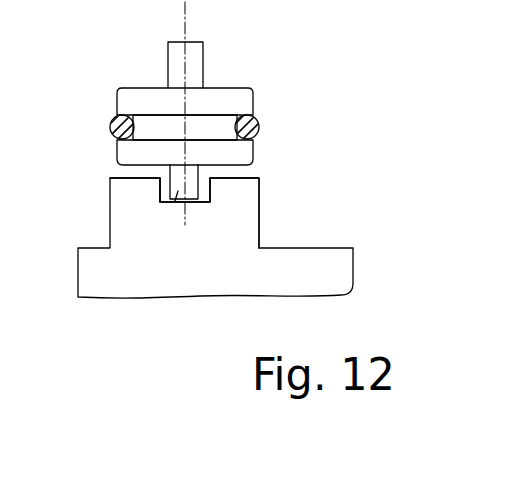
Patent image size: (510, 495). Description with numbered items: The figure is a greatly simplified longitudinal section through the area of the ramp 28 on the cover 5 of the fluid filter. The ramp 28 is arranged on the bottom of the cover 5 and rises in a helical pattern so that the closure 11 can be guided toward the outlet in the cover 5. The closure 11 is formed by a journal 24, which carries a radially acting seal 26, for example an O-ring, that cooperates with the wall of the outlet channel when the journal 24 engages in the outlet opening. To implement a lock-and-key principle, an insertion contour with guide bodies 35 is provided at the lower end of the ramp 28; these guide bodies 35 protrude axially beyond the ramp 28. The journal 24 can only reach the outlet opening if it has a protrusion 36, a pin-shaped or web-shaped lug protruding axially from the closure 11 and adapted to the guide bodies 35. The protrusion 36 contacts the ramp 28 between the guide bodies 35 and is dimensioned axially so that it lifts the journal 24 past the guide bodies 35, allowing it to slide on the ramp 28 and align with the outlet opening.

The cover 5 is at (337, 247).
The closure 11 is at (207, 82).
The journal 24 is at (128, 99).
The seal 26 is at (258, 127).
The ramp 28 is at (168, 196).
The guide bodies 35 is at (130, 193).
The protrusion 36 is at (208, 193).